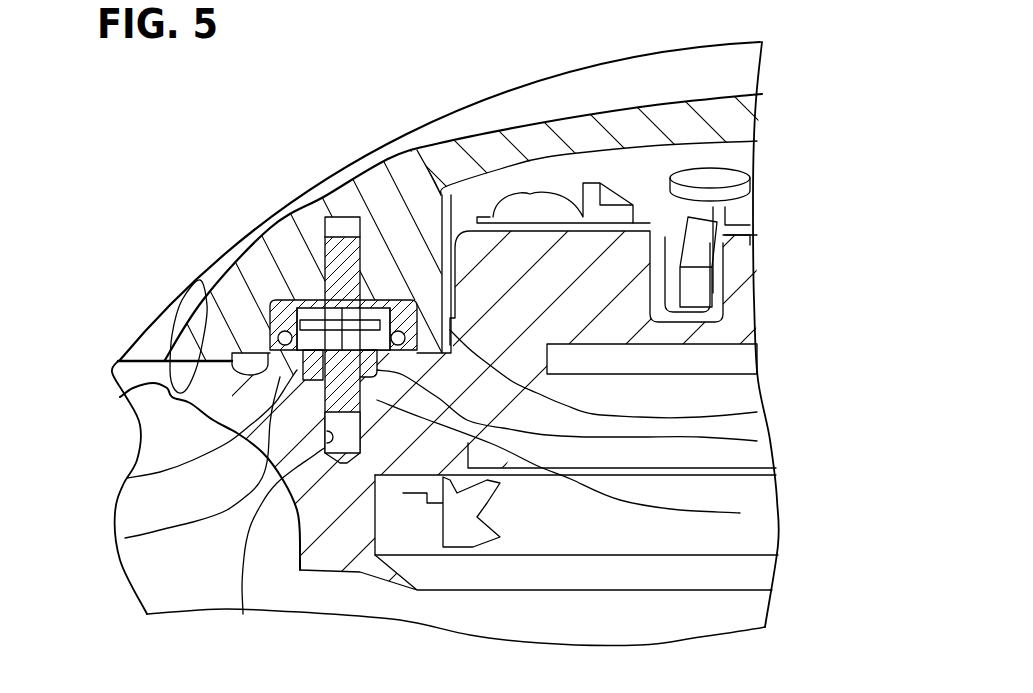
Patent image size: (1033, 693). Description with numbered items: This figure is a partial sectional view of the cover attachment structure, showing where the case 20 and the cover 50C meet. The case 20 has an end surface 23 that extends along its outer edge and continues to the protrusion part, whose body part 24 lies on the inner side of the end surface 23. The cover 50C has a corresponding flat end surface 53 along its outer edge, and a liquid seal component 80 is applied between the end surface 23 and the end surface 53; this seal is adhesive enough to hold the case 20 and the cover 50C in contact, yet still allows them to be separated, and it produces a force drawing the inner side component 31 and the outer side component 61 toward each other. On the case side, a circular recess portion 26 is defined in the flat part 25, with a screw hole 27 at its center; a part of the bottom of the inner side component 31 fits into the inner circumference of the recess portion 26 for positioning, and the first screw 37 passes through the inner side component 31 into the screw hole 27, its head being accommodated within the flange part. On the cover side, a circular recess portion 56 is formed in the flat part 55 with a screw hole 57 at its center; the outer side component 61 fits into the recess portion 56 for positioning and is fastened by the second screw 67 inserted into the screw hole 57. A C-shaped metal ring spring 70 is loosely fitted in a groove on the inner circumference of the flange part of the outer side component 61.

The cover 50C is at (558, 74).
The body part 24 is at (523, 248).
The ring spring 70 is at (407, 300).
The screw hole 57 is at (332, 217).
The second screw 67 is at (322, 268).
The recess portion 56 is at (283, 300).
The outer side component 61 is at (297, 350).
The end surface 53 is at (268, 358).
The end surface 23 is at (191, 343).
The case 20 is at (116, 363).
The liquid seal component 80 is at (140, 391).
The inner side component 31 is at (127, 478).
The first screw 37 is at (125, 538).
The screw hole 27 is at (243, 614).
The flat part 25 is at (757, 412).
The flat part 55 is at (757, 441).
The recess portion 26 is at (740, 513).